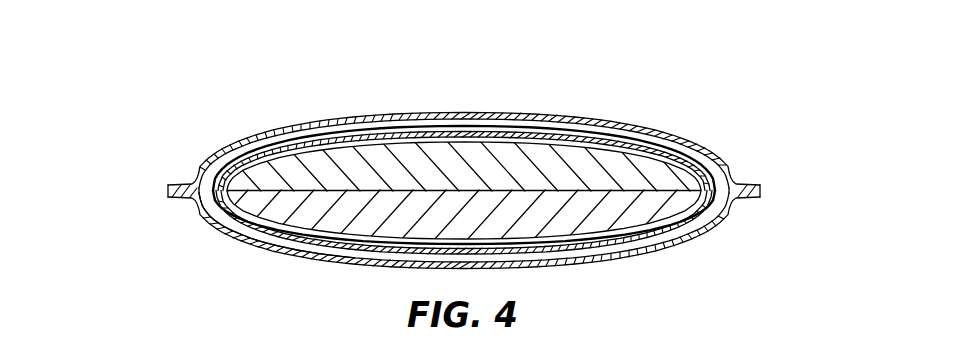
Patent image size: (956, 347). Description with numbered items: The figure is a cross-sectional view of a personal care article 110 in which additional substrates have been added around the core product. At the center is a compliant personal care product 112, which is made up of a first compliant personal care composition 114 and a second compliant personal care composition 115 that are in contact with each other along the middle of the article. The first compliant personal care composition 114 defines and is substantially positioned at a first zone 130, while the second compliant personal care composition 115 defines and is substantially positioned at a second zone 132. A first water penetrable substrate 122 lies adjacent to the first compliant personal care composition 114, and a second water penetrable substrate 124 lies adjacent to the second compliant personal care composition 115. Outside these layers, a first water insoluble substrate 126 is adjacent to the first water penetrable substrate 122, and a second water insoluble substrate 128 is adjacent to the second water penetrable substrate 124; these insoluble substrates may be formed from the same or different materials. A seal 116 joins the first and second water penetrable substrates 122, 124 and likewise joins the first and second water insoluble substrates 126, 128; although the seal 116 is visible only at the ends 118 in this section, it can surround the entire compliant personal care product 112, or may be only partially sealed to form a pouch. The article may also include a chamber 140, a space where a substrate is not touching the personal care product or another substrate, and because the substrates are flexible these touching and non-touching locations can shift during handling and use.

The personal care article 110 is at (157, 136).
The compliant personal care product 112 is at (355, 170).
The first compliant personal care composition 114 is at (507, 157).
The second compliant personal care composition 115 is at (350, 230).
The seal 116 is at (748, 185).
The ends 118 is at (176, 198).
The first water penetrable substrate 122 is at (441, 127).
The second water penetrable substrate 124 is at (285, 250).
The first water insoluble substrate 126 is at (363, 117).
The second water insoluble substrate 128 is at (593, 266).
The first zone 130 is at (684, 115).
The second zone 132 is at (671, 267).
The chamber 140 is at (642, 138).